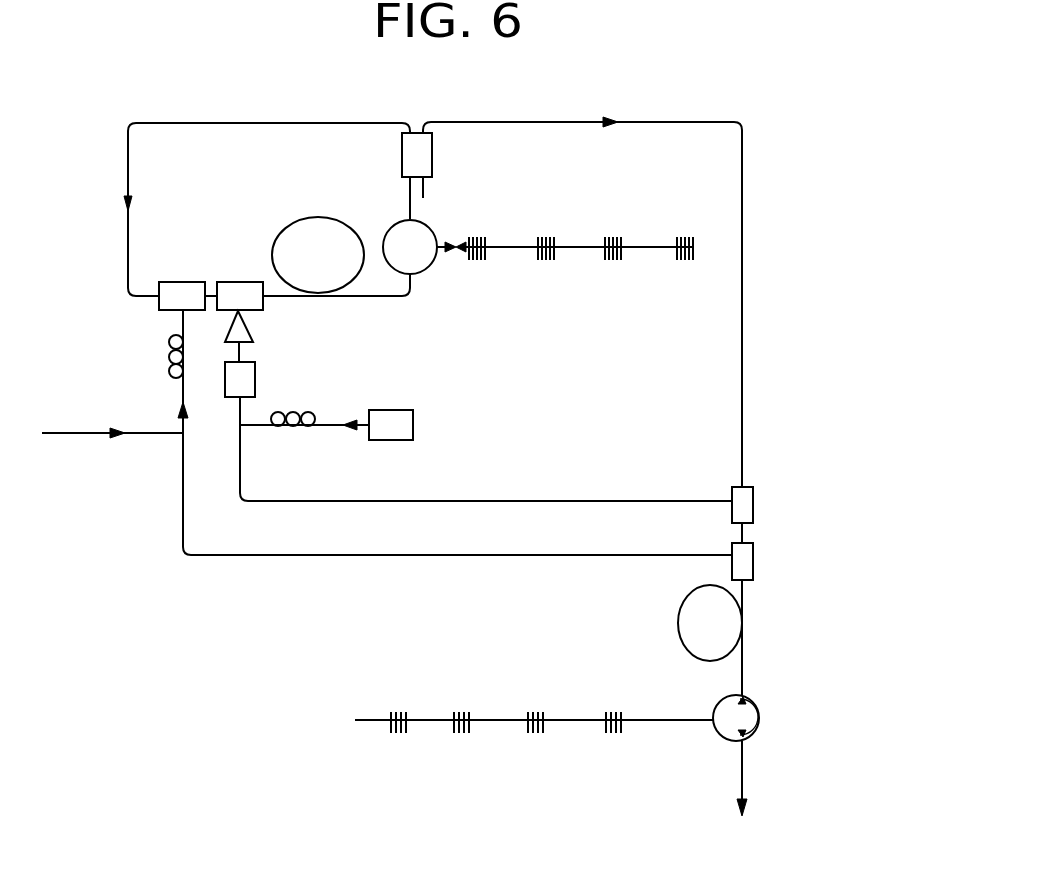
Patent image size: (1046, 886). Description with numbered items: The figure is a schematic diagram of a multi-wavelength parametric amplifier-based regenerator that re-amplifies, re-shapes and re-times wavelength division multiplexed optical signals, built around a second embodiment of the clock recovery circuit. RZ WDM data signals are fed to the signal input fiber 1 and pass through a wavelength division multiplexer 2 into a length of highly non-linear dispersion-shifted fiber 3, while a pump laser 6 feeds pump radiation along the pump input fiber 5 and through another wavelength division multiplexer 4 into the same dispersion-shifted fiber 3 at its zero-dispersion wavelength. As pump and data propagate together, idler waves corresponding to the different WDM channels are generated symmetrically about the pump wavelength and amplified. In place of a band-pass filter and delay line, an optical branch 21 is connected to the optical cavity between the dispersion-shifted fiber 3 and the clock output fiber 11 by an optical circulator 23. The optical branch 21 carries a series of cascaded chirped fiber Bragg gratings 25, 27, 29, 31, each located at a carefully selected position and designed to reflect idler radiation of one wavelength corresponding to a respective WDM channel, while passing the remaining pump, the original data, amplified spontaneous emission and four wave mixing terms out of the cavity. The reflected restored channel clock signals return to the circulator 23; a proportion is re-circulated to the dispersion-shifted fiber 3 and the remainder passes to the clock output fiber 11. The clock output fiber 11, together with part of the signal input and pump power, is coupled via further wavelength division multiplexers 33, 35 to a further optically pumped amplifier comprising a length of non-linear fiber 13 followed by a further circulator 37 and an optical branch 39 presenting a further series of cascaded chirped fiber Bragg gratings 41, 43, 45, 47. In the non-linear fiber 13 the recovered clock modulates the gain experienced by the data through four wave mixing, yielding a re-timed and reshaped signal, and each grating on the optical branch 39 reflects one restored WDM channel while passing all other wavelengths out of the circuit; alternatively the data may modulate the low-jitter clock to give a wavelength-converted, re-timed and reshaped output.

The signal input fiber 1 is at (92, 436).
The wavelength division multiplexer 2 is at (177, 281).
The dispersion-shifted fiber 3 is at (318, 217).
The wavelength division multiplexer 4 is at (237, 281).
The pump input fiber 5 is at (265, 428).
The pump laser 6 is at (413, 428).
The clock output fiber 11 is at (568, 121).
The non-linear fiber 13 is at (678, 612).
The optical branch 21 is at (575, 243).
The optical circulator 23 is at (433, 228).
The chirped fiber Bragg grating 25 is at (486, 261).
The chirped fiber Bragg grating 27 is at (554, 261).
The chirped fiber Bragg grating 29 is at (621, 261).
The chirped fiber Bragg grating 31 is at (693, 261).
The wavelength division multiplexer 33 is at (753, 505).
The wavelength division multiplexer 35 is at (753, 560).
The circulator 37 is at (756, 732).
The optical branch 39 is at (662, 722).
The chirped fiber Bragg grating 41 is at (607, 734).
The chirped fiber Bragg grating 43 is at (528, 734).
The chirped fiber Bragg grating 45 is at (455, 734).
The chirped fiber Bragg grating 47 is at (392, 734).